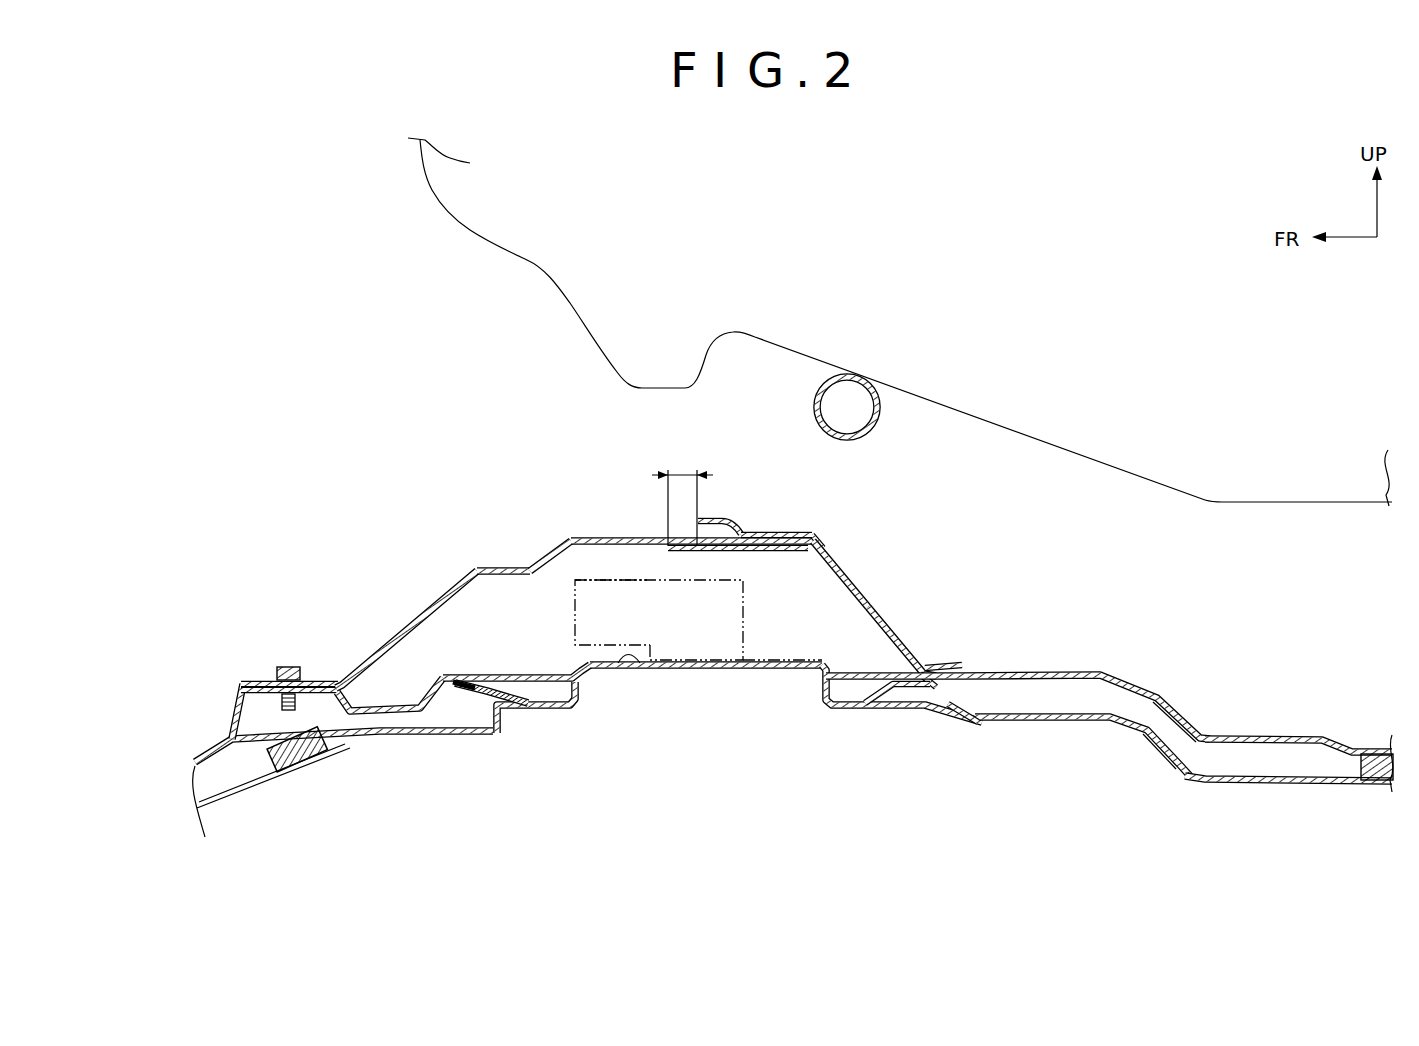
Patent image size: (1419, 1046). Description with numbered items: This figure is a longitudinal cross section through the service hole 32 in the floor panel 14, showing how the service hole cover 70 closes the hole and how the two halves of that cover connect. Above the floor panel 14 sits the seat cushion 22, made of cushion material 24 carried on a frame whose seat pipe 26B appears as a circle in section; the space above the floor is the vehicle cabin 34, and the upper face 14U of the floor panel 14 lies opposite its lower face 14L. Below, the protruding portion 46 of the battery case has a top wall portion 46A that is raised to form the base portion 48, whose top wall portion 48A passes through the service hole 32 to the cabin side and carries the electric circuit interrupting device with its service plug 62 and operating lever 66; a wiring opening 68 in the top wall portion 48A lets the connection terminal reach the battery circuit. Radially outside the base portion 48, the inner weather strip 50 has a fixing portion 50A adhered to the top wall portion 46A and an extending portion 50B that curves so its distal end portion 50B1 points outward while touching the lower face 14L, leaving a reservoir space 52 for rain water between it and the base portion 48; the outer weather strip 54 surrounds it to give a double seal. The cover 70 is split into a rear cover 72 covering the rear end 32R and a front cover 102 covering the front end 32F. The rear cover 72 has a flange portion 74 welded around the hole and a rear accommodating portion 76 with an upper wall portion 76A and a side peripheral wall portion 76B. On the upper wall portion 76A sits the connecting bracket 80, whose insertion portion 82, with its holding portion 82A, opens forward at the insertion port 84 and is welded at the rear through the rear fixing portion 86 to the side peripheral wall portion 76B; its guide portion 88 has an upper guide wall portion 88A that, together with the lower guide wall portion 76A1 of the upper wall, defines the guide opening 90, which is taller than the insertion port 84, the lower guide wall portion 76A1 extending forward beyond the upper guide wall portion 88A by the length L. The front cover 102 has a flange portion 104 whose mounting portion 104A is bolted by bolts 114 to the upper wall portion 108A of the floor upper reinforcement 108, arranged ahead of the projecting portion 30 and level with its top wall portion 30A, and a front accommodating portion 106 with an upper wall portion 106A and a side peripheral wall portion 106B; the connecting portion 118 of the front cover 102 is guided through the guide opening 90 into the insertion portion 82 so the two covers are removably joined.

The floor panel 14 is at (1289, 744).
The upper wall of floor side member 14U is at (1280, 737).
The lower face of floor panel 14L is at (1279, 784).
The seat cushion 22 is at (1368, 512).
The cushion material 24 is at (1314, 505).
The seat pipe 26B is at (878, 418).
The projecting portion 30 is at (1080, 689).
The top wall portion of projecting portion 30A is at (1057, 671).
The service hole 32 is at (696, 702).
The front end of service hole 32F is at (468, 697).
The rear end of service hole 32R is at (840, 676).
The vehicle cabin 34 is at (567, 339).
The protruding portion 46 is at (1069, 705).
The top wall portion of protruding portion 46A is at (958, 702).
The base portion 48 is at (840, 689).
The top wall portion of base portion 48A is at (628, 665).
The inner weather strip 50 is at (483, 753).
The fixing portion 50A is at (538, 703).
The extending portion 50B is at (459, 753).
The distal end portion 50B1 is at (457, 688).
The reservoir space 52 is at (573, 704).
The outer weather strip 54 is at (272, 760).
The service plug 62 is at (652, 605).
The operating lever 66 is at (557, 560).
The wiring opening 68 is at (706, 699).
The service hole cover 70 is at (677, 528).
The rear cover 72 is at (915, 567).
The flange portion 74 is at (946, 665).
The rear accommodating portion 76 is at (900, 609).
The upper wall portion 76A is at (698, 605).
The lower guide wall portion 76A1 is at (685, 551).
The side peripheral wall portion 76B is at (892, 614).
The connecting bracket 80 is at (826, 480).
The insertion portion 82 is at (842, 495).
The holding portion 82A is at (793, 531).
The insertion port 84 is at (733, 531).
The rear fixing portion 86 is at (845, 573).
The guide portion 88 is at (761, 473).
The upper guide wall portion 88A is at (757, 531).
The guide opening 90 is at (717, 551).
The front cover 102 is at (402, 513).
The flange portion 104 is at (305, 703).
The mounting portion 104A is at (249, 682).
The front accommodating portion 106 is at (478, 565).
The upper wall portion 106A is at (597, 537).
The side peripheral wall portion 106B is at (440, 600).
The floor upper reinforcement 108 is at (305, 749).
The upper wall portion of floor reinforcement 108A is at (231, 727).
The bolt 114 is at (290, 667).
The connecting portion 118 is at (763, 552).
The length L is at (682, 473).